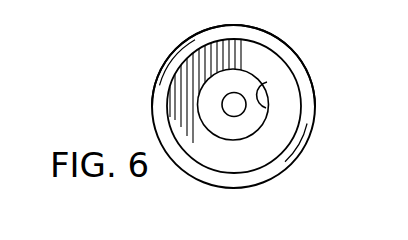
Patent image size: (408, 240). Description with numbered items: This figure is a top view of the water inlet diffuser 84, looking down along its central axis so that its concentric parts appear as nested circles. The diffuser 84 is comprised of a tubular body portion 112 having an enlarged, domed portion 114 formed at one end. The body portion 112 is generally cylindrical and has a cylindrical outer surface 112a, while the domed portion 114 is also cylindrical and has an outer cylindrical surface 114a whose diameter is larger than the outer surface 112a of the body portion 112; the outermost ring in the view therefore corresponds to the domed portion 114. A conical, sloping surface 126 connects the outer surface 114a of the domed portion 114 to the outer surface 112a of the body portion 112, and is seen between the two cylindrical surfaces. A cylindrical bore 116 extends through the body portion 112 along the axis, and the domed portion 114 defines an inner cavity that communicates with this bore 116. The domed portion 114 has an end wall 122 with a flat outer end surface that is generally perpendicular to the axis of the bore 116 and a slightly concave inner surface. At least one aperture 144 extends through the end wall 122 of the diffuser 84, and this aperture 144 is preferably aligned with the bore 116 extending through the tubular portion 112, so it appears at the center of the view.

The diffuser 84 is at (318, 73).
The tubular body portion 112 is at (303, 106).
The cylindrical outer surface 112a is at (160, 87).
The domed portion 114 is at (308, 142).
The outer cylindrical surface 114a is at (293, 162).
The cylindrical bore 116 is at (264, 93).
The end wall 122 is at (224, 126).
The conical sloping surface 126 is at (158, 113).
The aperture 144 is at (232, 95).